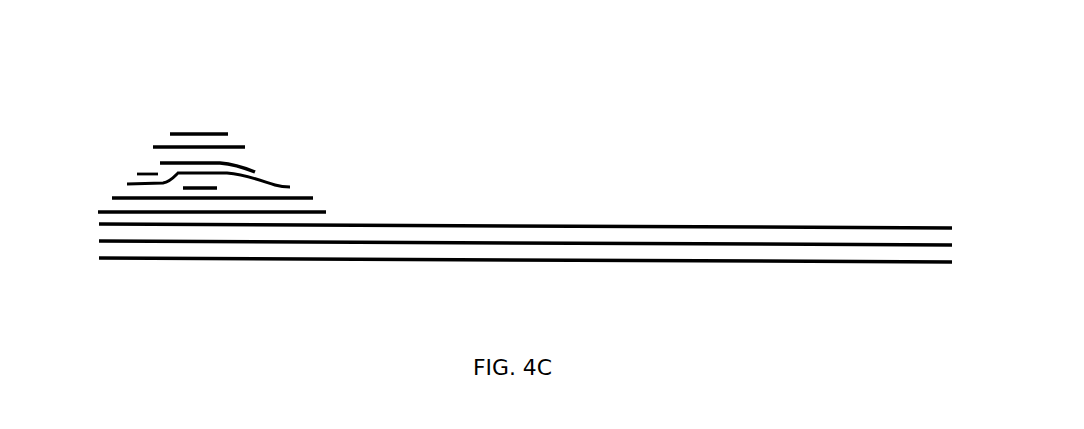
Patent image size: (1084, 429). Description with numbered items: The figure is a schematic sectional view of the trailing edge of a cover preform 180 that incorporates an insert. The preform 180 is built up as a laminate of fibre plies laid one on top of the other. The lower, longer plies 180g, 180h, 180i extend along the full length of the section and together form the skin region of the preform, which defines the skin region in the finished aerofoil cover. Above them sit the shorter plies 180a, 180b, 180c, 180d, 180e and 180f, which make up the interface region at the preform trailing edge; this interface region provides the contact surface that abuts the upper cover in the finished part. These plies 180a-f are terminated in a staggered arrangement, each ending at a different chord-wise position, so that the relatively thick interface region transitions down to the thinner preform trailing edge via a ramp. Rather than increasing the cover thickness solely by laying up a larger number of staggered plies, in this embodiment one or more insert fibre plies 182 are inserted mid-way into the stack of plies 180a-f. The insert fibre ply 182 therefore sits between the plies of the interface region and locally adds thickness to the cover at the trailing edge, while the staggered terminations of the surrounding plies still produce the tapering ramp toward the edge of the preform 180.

The preform 180 is at (481, 100).
The ply 180a is at (176, 133).
The ply 180b is at (225, 146).
The ply 180c is at (167, 163).
The ply 180d is at (273, 185).
The ply 180e is at (313, 198).
The ply 180f is at (326, 212).
The ply 180g is at (457, 224).
The ply 180h is at (630, 243).
The ply 180i is at (477, 260).
The insert fibre ply 182 is at (193, 188).